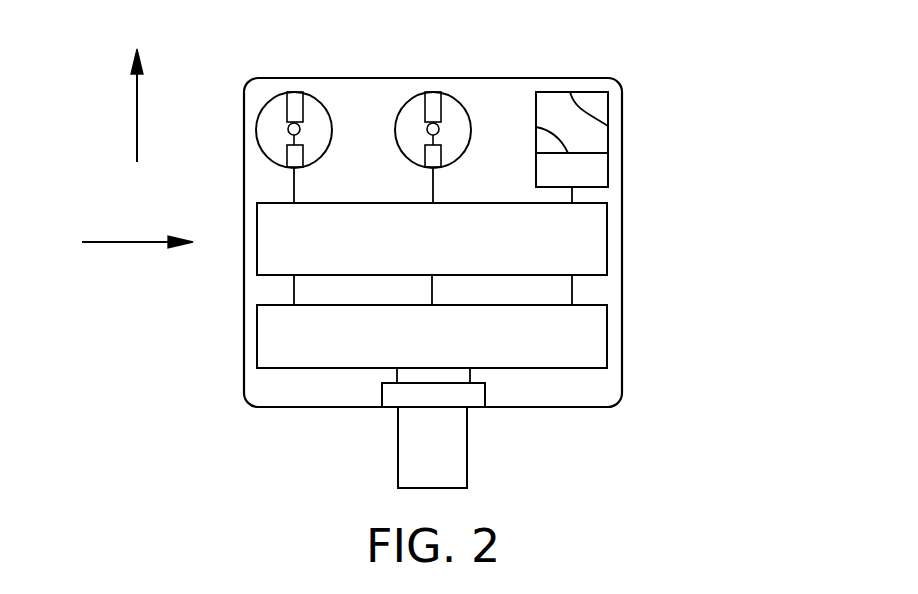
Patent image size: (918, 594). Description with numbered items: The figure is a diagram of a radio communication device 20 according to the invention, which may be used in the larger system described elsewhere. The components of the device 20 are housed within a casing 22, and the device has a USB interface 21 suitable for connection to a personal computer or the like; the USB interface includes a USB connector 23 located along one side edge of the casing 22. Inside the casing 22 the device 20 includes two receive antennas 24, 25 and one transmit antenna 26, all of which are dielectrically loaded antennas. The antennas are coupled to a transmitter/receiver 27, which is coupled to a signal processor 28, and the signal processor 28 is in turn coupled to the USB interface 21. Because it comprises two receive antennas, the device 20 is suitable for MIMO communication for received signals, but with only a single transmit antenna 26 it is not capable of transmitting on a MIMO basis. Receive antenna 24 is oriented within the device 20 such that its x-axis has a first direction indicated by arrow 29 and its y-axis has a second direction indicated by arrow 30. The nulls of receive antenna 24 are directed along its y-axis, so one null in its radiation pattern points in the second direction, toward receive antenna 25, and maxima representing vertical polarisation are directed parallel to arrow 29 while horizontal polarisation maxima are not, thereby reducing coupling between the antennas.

The radio communication device 20 is at (709, 106).
The USB interface 21 is at (383, 408).
The casing 22 is at (590, 409).
The USB connector 23 is at (467, 463).
The receive antenna 24 is at (300, 92).
The receive antenna 25 is at (591, 92).
The transmit antenna 26 is at (438, 92).
The transmitter/receiver 27 is at (607, 240).
The signal processor 28 is at (607, 337).
The arrow 29 is at (137, 112).
The arrow 30 is at (128, 243).